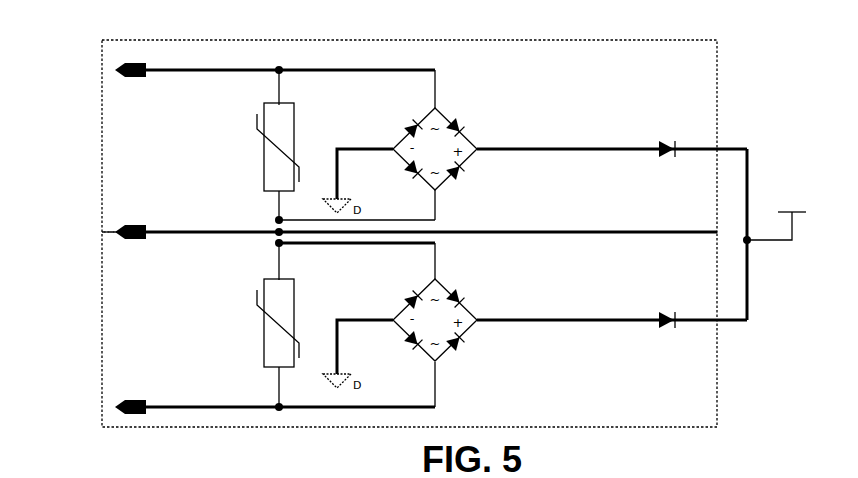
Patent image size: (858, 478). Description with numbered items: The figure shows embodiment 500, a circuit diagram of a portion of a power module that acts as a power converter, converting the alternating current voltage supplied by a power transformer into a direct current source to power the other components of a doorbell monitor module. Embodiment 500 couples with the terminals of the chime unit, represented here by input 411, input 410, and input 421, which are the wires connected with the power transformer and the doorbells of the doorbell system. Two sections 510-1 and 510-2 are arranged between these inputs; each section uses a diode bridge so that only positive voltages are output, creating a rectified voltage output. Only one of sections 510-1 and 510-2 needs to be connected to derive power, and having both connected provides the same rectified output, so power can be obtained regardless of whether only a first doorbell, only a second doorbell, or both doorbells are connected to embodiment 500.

The embodiment of a circuit diagram of a portion of a power module 500 is at (775, 70).
The section 510-1 is at (687, 40).
The section 510-2 is at (612, 427).
The input 411 is at (131, 62).
The input 410 is at (128, 225).
The input 421 is at (124, 400).